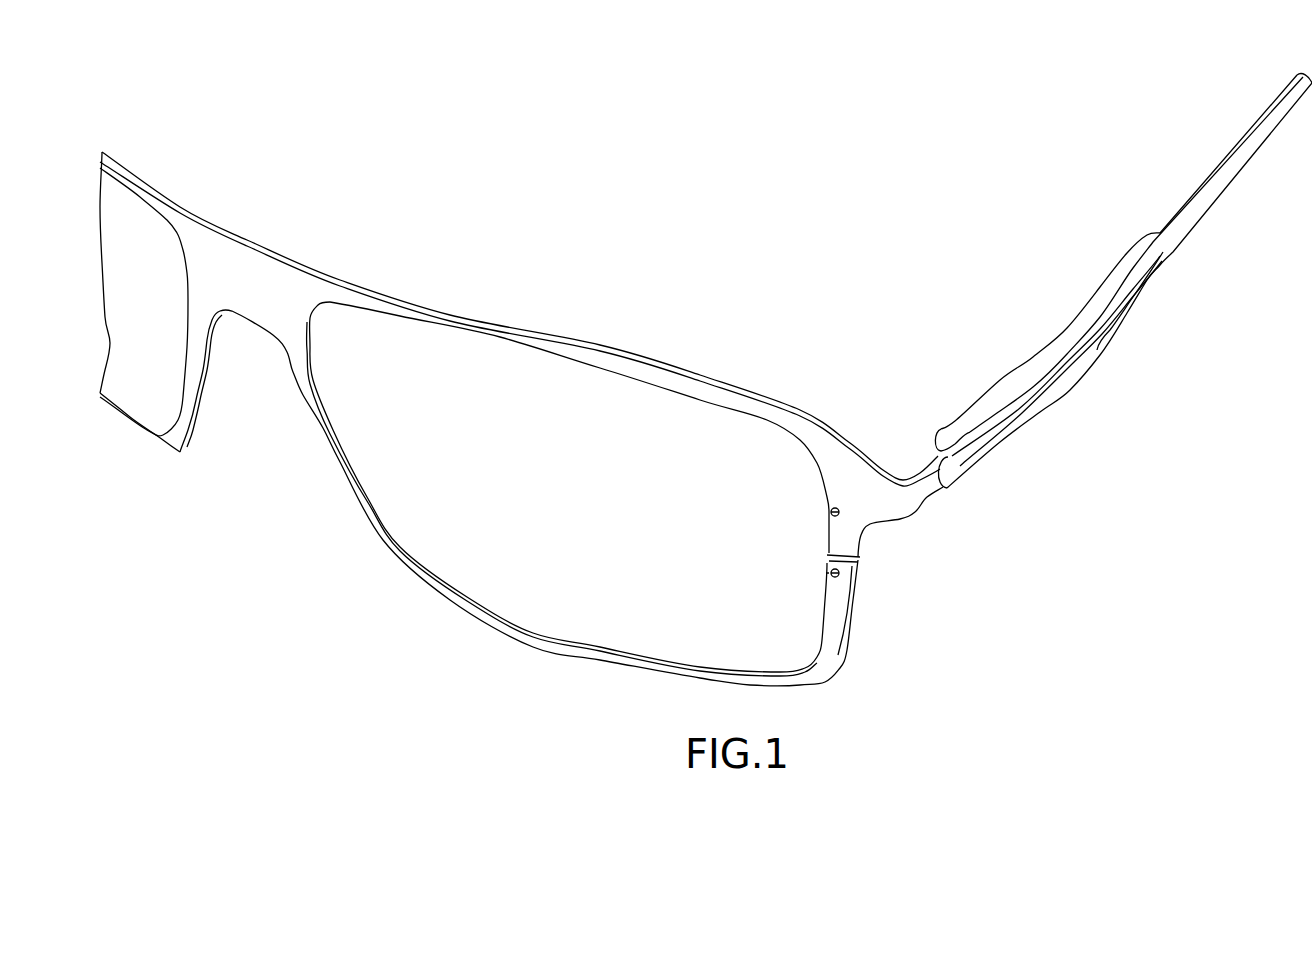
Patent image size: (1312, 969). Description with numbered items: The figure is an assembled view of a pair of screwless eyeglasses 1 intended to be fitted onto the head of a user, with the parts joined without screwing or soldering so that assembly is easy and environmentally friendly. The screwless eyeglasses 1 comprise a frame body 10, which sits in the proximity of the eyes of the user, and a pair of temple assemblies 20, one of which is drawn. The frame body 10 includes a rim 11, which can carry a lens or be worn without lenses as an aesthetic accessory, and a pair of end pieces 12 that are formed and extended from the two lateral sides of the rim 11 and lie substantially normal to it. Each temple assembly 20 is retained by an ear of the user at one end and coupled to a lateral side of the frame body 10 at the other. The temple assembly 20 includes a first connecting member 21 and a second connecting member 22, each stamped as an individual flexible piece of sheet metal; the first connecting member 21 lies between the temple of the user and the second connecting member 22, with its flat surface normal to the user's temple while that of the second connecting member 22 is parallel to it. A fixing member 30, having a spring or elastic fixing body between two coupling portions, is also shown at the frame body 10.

The screwless eyeglasses 1 is at (362, 63).
The frame body 10 is at (512, 238).
The rim 11 is at (657, 362).
The end piece 12 is at (918, 495).
The temple assembly 20 is at (1172, 322).
The first connecting member 21 is at (1040, 363).
The second connecting member 22 is at (1063, 394).
The fixing member 30 is at (829, 513).